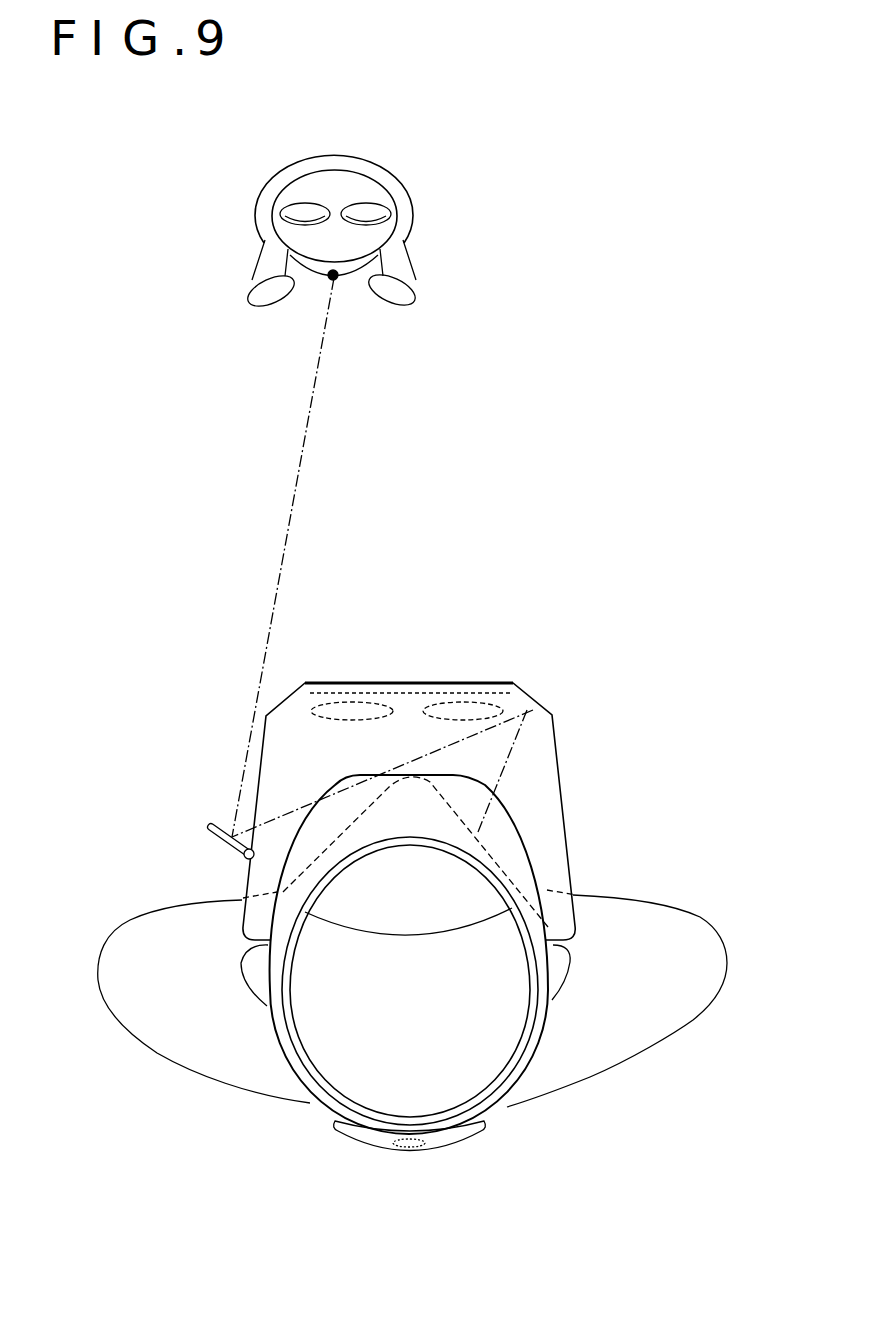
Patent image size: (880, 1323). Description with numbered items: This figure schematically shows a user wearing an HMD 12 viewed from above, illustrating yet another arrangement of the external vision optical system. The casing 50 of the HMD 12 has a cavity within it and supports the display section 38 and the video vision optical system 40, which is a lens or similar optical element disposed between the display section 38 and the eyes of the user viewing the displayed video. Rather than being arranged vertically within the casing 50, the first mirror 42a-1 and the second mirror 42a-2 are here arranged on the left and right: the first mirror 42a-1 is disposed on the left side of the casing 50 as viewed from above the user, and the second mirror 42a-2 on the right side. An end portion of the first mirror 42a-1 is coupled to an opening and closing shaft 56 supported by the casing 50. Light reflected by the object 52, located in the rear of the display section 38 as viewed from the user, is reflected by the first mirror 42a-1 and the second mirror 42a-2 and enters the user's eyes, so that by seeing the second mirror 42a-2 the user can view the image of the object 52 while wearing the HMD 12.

The HMD 12 is at (682, 730).
The display section 38 is at (453, 680).
The video vision optical system 40 is at (437, 697).
The first mirror 42a-1 is at (211, 827).
The second mirror 42a-2 is at (549, 727).
The casing 50 is at (557, 832).
The object 52 is at (413, 213).
The opening and closing shaft 56 is at (245, 864).